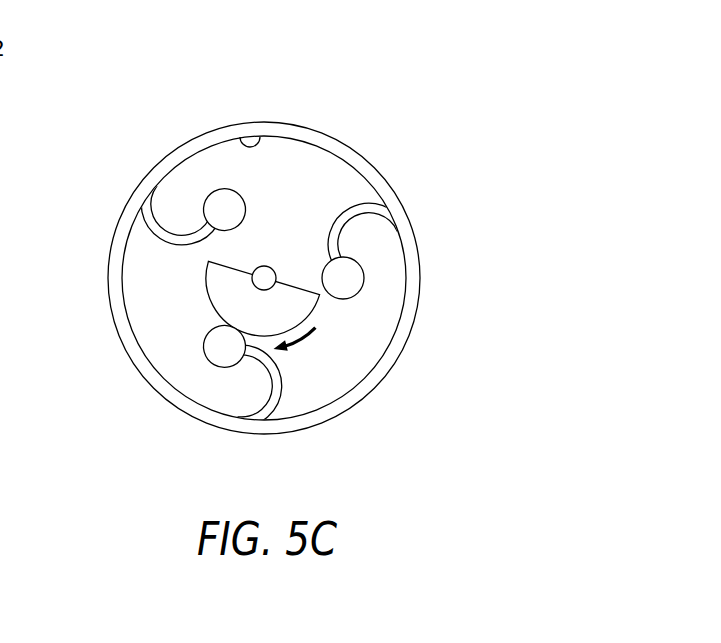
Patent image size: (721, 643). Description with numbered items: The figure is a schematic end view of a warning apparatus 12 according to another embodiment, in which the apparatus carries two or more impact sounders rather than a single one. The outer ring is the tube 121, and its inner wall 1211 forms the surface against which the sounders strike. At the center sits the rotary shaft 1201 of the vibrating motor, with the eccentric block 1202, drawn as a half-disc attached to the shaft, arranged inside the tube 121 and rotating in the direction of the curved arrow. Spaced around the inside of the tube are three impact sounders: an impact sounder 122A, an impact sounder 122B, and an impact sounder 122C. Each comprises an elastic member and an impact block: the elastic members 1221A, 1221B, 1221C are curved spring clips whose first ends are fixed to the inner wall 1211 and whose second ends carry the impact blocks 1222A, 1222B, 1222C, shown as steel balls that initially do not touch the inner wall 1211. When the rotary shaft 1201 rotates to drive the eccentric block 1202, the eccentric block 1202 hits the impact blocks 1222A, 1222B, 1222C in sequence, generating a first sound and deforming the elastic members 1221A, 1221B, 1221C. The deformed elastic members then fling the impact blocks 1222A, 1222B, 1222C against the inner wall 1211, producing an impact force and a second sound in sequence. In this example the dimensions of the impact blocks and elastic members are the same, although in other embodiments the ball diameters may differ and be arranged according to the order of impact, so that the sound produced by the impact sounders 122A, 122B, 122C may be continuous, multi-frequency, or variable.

The warning apparatus 12 is at (413, 115).
The tube 121 is at (200, 132).
The inner wall 1211 is at (260, 135).
The rotary shaft 1201 is at (267, 266).
The eccentric block 1202 is at (297, 302).
The impact sounder 122A is at (280, 392).
The elastic member 1221A is at (267, 395).
The impact block 1222A is at (227, 350).
The impact sounder 122B is at (168, 241).
The elastic member 1221B is at (163, 225).
The impact block 1222B is at (225, 215).
The impact sounder 122C is at (367, 222).
The elastic member 1221C is at (403, 206).
The impact block 1222C is at (422, 287).